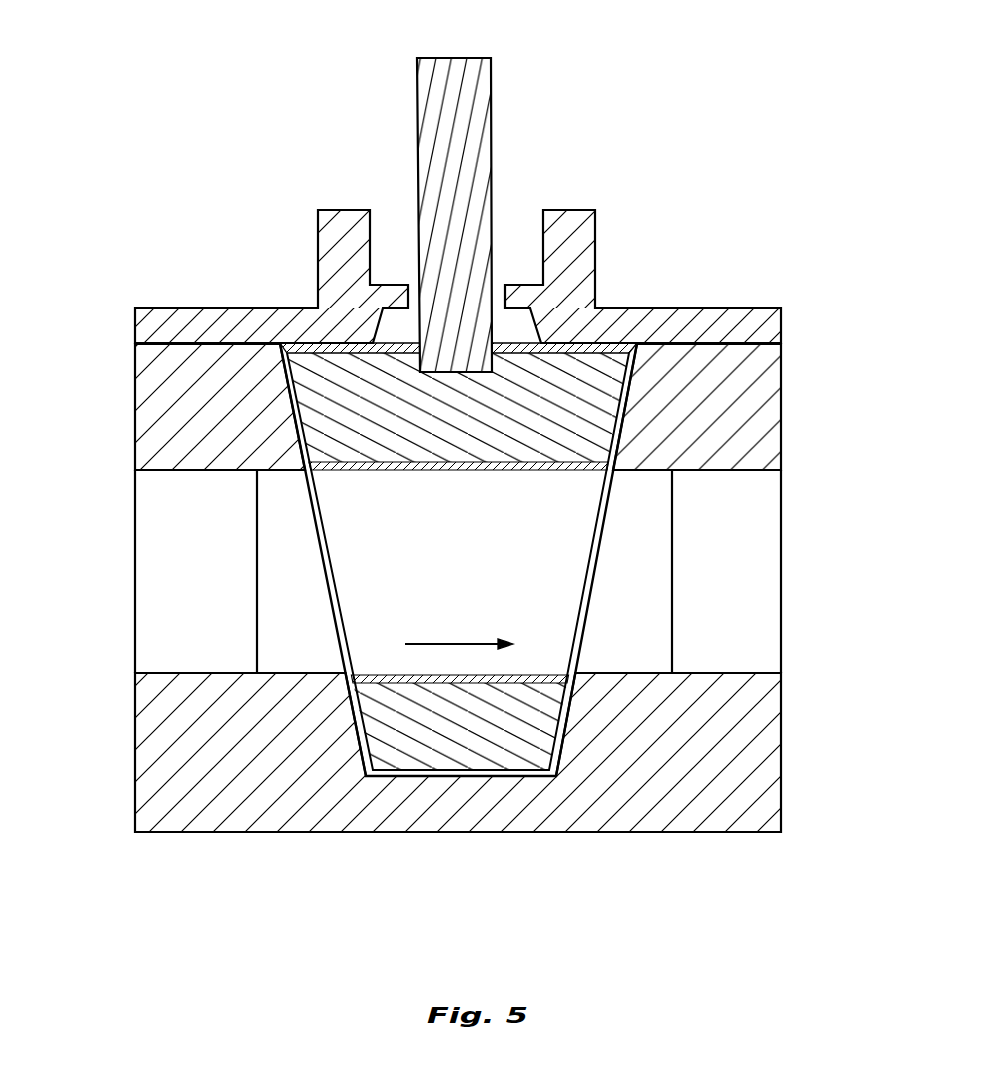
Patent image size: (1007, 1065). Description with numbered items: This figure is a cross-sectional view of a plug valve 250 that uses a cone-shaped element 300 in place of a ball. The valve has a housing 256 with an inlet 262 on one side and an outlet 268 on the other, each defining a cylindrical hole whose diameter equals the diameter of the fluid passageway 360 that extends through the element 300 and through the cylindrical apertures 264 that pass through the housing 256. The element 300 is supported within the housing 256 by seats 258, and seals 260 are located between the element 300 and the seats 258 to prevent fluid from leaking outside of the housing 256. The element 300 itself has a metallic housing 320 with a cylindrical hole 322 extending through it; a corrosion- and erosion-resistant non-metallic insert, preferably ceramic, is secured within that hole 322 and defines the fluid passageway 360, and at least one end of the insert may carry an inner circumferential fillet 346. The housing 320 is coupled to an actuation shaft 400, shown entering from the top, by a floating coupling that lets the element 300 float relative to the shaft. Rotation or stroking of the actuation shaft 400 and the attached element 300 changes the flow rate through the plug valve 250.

The plug valve 250 is at (715, 192).
The housing 256 is at (758, 413).
The seats 258 is at (173, 328).
The seals 260 is at (308, 350).
The inlet 262 is at (167, 589).
The cylindrical apertures 264 is at (269, 605).
The outlet 268 is at (709, 585).
The element 300 is at (357, 732).
The housing of element 320 is at (333, 395).
The cylindrical hole 322 is at (442, 522).
The inner circumferential fillet 346 is at (537, 465).
The fluid passageway 360 is at (442, 569).
The actuation shaft 400 is at (492, 122).